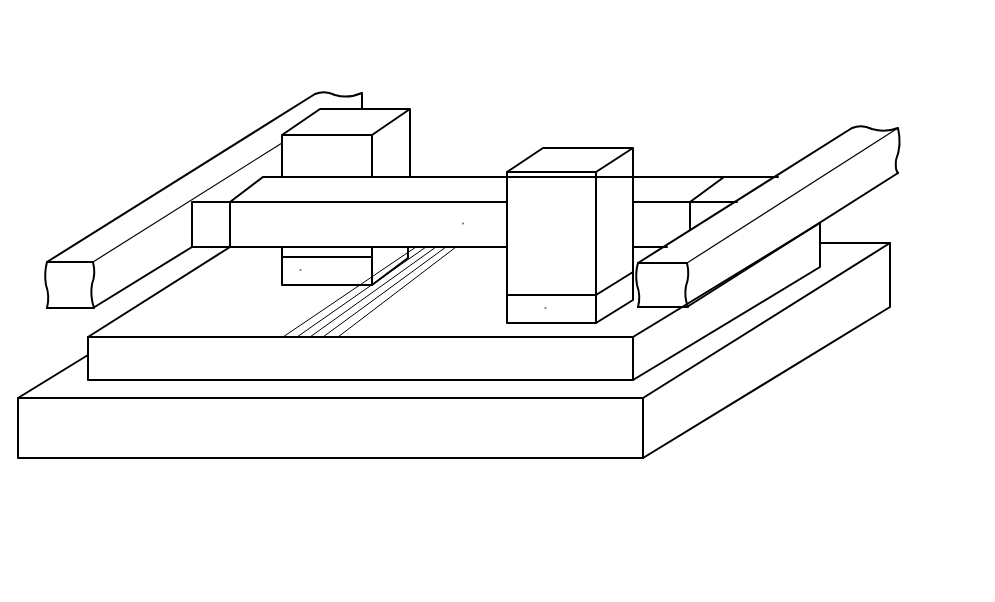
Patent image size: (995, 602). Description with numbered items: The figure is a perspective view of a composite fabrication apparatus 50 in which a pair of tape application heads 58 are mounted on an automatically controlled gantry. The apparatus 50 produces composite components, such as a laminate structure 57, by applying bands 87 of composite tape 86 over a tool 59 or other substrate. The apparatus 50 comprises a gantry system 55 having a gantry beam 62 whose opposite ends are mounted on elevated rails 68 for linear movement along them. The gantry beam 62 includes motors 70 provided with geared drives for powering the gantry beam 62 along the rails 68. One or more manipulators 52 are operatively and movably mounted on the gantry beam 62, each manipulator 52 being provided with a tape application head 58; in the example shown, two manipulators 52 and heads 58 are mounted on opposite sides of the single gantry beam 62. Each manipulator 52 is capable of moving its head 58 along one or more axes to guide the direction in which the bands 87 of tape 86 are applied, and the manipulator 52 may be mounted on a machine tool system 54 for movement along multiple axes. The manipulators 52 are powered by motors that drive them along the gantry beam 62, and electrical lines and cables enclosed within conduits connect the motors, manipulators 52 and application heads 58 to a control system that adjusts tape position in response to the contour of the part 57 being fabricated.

The composite fabrication apparatus 50 is at (781, 90).
The manipulator 52 is at (386, 107).
The machine tool system 54 is at (811, 154).
The gantry system 55 is at (454, 176).
The laminate structure 57 is at (467, 363).
The tape application head 58 is at (300, 270).
The tool 59 is at (132, 428).
The gantry beam 62 is at (463, 223).
The elevated rails 68 is at (127, 230).
The motors 70 is at (213, 220).
The composite tape 86 is at (389, 285).
The bands 87 is at (271, 341).